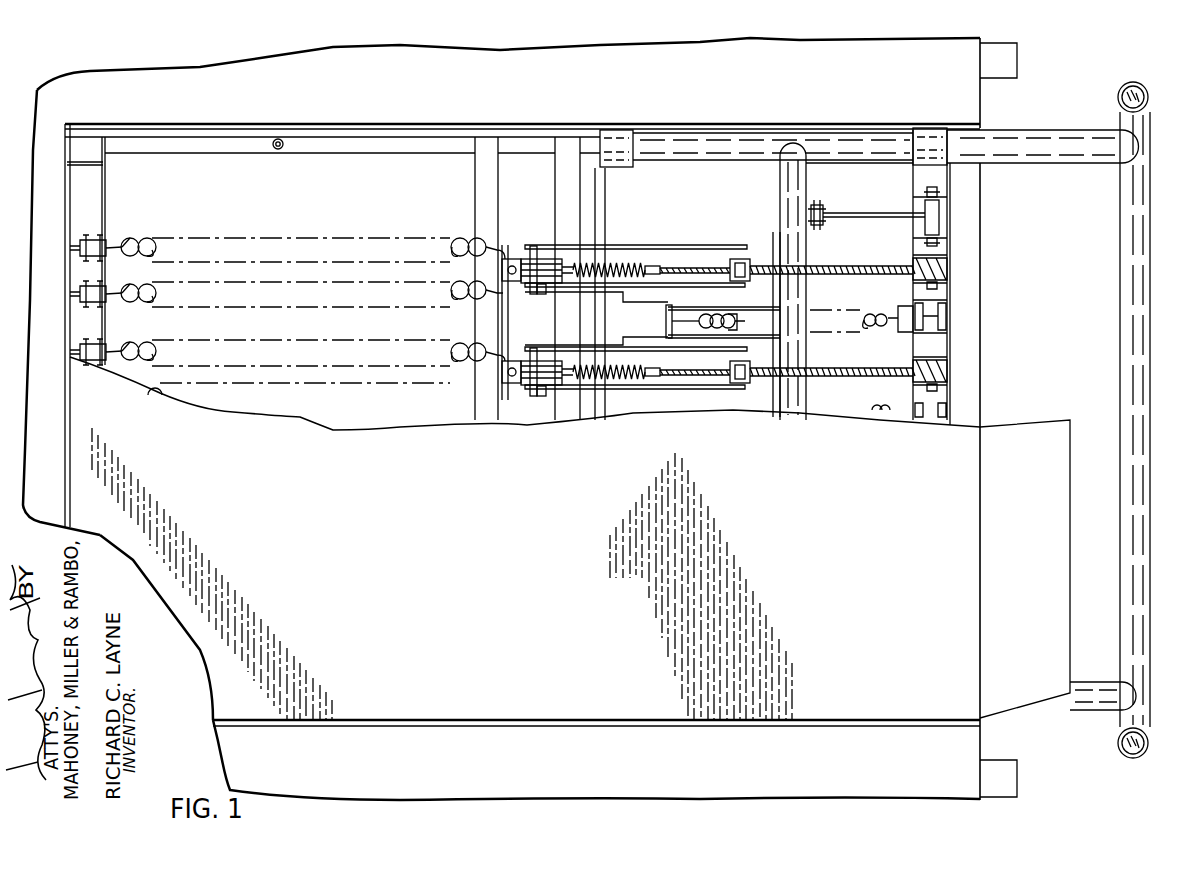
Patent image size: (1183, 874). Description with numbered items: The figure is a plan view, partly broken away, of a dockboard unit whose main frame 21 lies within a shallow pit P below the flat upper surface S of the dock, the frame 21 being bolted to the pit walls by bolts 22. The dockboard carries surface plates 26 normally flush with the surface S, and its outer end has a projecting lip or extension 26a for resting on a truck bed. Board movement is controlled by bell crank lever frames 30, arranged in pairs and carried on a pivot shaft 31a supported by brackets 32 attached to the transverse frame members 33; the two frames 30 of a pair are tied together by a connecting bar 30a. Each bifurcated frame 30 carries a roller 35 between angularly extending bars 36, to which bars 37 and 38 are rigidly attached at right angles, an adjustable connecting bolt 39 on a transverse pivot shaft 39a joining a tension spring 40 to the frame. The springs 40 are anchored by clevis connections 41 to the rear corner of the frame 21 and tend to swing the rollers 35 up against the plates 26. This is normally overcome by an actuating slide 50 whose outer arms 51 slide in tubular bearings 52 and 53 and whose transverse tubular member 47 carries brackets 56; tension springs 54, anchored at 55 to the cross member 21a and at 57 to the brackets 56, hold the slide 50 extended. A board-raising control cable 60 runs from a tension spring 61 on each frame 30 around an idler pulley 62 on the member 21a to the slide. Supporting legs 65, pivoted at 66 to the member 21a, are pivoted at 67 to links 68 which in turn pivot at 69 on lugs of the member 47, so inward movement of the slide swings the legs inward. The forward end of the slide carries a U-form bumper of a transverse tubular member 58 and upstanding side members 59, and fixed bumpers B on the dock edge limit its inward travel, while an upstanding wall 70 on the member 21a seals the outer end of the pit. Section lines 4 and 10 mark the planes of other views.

The upper surface of dock S is at (548, 112).
The pit P is at (371, 192).
The fixed bumpers B is at (1017, 60).
The main frame 21 is at (340, 140).
The cross member 21a is at (940, 343).
The bolts 22 is at (278, 150).
The surface plates 26 is at (436, 577).
The lip or extension 26a is at (1038, 554).
The rocker frames or bell crank lever frames 30 is at (649, 248).
The connecting bar 30a is at (605, 330).
The pivot shaft 31a is at (523, 323).
The brackets 32 is at (511, 258).
The transverse frame members 33 is at (480, 170).
The roller 35 is at (749, 269).
The angularly extending bars 36 is at (712, 250).
The bars 37 is at (590, 262).
The bars 38 is at (533, 395).
The adjustable connecting bolt 39 is at (547, 246).
The transverse pivot shaft 39a is at (541, 398).
The tension springs 40 is at (462, 238).
The clevis connections 41 is at (107, 245).
The transverse tubular member 47 is at (800, 188).
The actuating slide 50 is at (985, 135).
The outer arms 51 is at (857, 130).
The tubular bearings 52 is at (625, 130).
The tubular bearings 53 is at (925, 128).
The tension springs 54 is at (737, 322).
The spring anchorage 55 is at (908, 312).
The brackets 56 is at (730, 336).
The spring anchorage 57 is at (680, 322).
The transverse tubular member 58 is at (1130, 500).
The upstanding side members 59 is at (1118, 93).
The board-raising control cable 60 is at (686, 262).
The tension spring 61 is at (616, 262).
The idler pulley 62 is at (915, 362).
The supporting legs 65 is at (935, 222).
The leg pivot 66 is at (932, 190).
The pivot 67 is at (927, 212).
The link 68 is at (885, 218).
The pivot 69 is at (823, 214).
The upstanding wall 70 is at (950, 296).
The section line 4- 4 is at (445, 314).
The section line 10- 10 is at (738, 250).